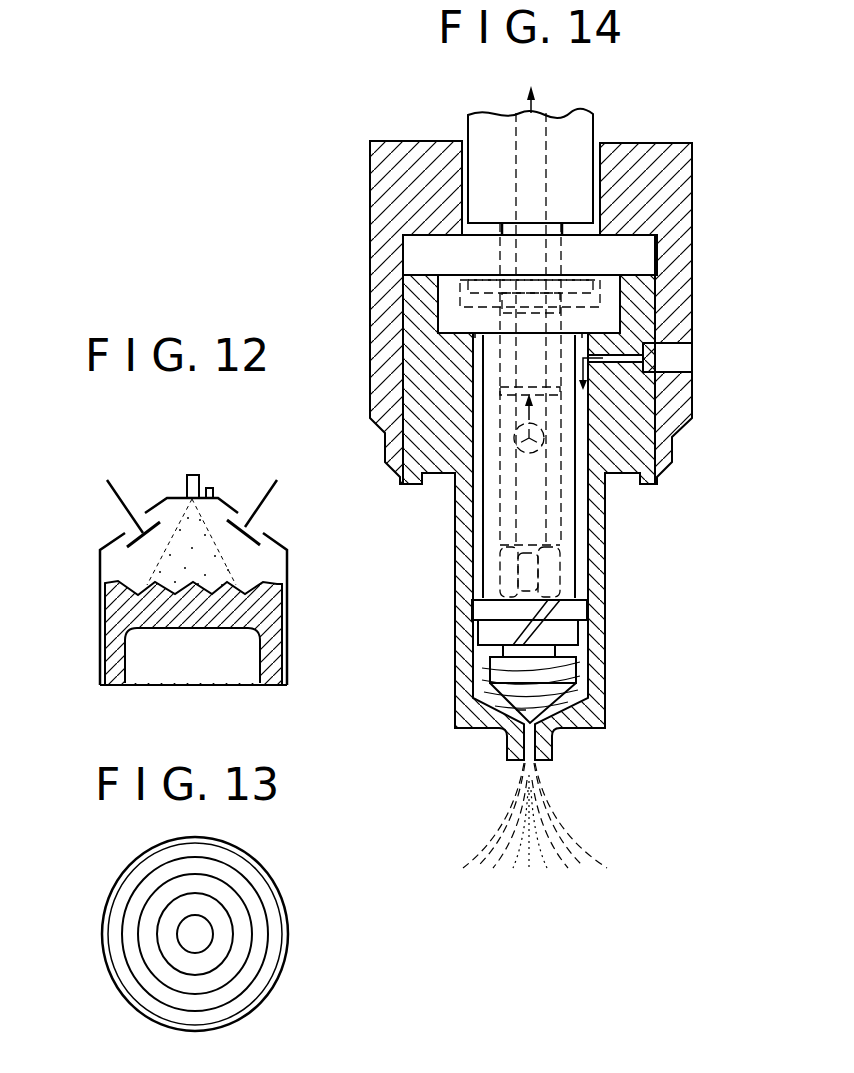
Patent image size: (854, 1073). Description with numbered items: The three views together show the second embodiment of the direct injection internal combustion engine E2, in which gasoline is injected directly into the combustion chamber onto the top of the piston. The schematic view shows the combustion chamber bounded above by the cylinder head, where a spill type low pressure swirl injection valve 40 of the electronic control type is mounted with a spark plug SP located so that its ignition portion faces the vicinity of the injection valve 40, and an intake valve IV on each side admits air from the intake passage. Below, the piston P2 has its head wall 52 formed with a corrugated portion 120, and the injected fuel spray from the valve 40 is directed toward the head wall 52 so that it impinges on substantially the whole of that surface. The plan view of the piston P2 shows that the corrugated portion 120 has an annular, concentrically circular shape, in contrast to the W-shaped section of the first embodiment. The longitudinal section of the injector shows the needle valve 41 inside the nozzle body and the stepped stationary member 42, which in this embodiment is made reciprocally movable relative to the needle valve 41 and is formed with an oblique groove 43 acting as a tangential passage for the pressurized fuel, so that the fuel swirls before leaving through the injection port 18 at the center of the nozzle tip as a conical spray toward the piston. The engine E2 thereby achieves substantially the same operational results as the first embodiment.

In FIG. 12, the spill type low pressure swirl injection valve 40 is at (187, 476).
In FIG. 14, the spill type low pressure swirl injection valve 40 is at (673, 408).
In FIG. 12, the spark plug SP is at (214, 490).
In FIG. 12, the intake valve IV is at (116, 494).
In FIG. 12, the internal combustion engine E2 is at (97, 596).
In FIG. 12, the piston P2 is at (223, 625).
In FIG. 13, the piston P2 is at (286, 941).
In FIG. 12, the head wall 52 is at (278, 584).
In FIG. 13, the head wall 52 is at (253, 875).
In FIG. 12, the corrugated portion 120 is at (215, 589).
In FIG. 13, the corrugated portion 120 is at (248, 912).
In FIG. 14, the needle valve 41 is at (542, 507).
In FIG. 14, the stepped stationary member 42 is at (572, 632).
In FIG. 14, the oblique groove 43 is at (557, 649).
In FIG. 14, the injection port 18 is at (533, 762).